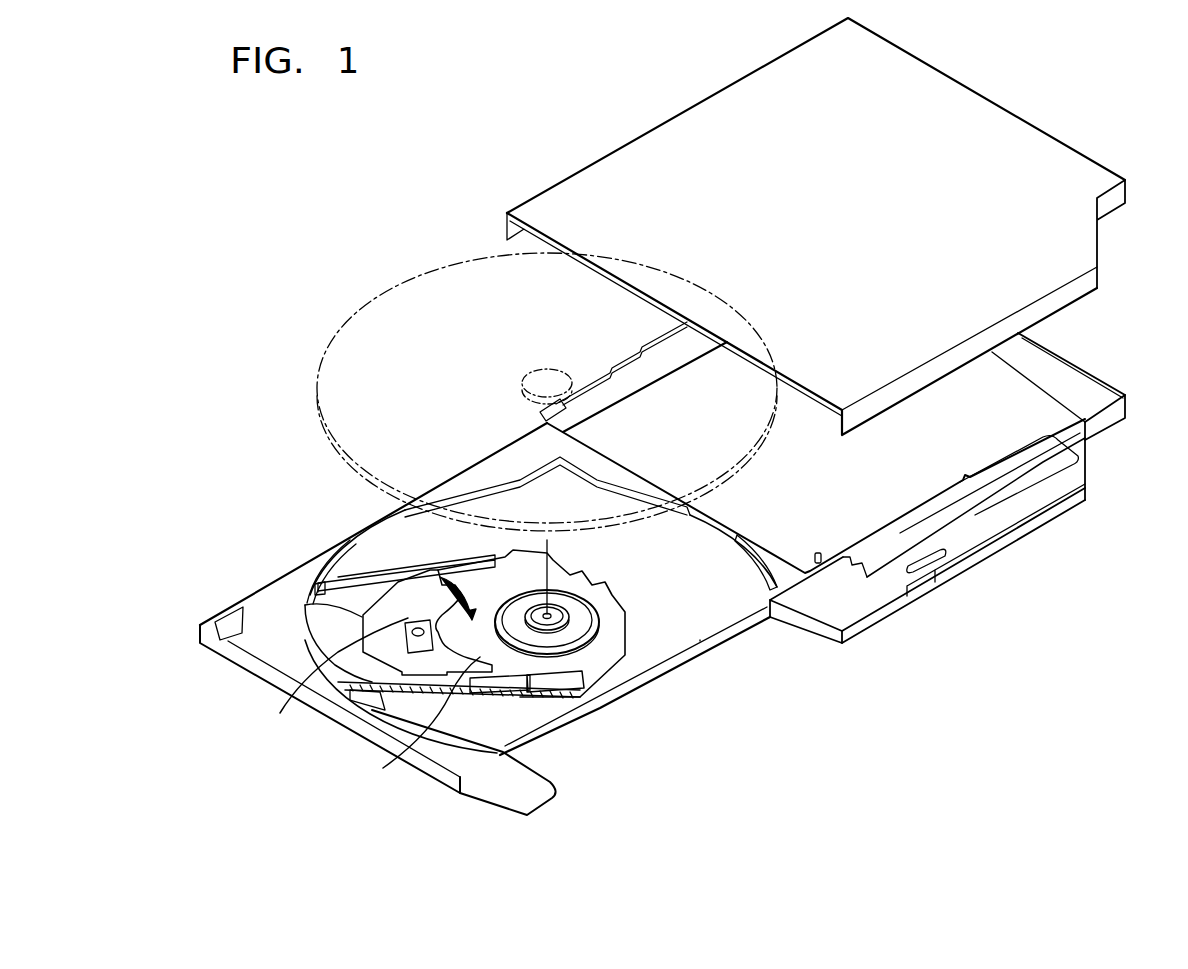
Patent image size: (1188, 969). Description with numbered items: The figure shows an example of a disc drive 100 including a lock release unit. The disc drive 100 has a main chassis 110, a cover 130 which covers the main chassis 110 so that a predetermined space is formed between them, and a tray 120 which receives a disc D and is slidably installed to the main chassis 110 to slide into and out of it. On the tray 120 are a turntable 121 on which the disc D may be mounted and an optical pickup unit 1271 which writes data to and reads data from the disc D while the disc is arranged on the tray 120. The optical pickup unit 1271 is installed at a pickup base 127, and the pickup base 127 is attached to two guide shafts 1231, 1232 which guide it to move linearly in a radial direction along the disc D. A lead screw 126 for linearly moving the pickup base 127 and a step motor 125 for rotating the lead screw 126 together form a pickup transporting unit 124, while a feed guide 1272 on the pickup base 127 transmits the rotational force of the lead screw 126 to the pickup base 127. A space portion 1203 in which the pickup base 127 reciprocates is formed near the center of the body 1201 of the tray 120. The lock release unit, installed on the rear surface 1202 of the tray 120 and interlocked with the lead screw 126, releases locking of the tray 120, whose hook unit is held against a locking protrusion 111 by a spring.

The disc drive 100 is at (1122, 106).
The main chassis 110 is at (978, 568).
The locking protrusion 111 is at (818, 552).
The tray 120 is at (642, 698).
The body 1201 is at (683, 627).
The rear surface 1202 is at (683, 668).
The space portion 1203 is at (462, 547).
The turntable 121 is at (580, 610).
The pickup transporting unit 124 is at (617, 757).
The step motor 125 is at (567, 688).
The lead screw 126 is at (515, 695).
The pickup base 127 is at (370, 617).
The optical pickup unit 1271 is at (320, 667).
The feed guide 1272 is at (397, 757).
The guide shaft 1231 is at (363, 575).
The guide shaft 1232 is at (345, 687).
The cover 130 is at (582, 186).
The disc D is at (340, 348).